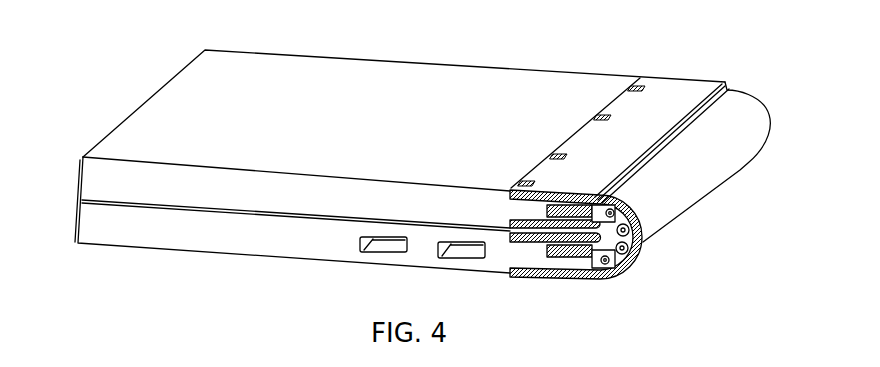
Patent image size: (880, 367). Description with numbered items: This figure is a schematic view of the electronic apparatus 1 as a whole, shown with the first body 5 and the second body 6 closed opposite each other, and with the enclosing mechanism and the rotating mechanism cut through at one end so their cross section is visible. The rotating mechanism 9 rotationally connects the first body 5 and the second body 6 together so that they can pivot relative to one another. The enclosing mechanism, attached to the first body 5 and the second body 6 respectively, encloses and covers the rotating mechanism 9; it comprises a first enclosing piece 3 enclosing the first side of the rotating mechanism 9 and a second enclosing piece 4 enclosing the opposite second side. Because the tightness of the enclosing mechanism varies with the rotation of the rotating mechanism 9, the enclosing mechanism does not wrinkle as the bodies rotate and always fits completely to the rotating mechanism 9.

The electronic apparatus 1 is at (458, 38).
The first enclosing piece 3 is at (613, 223).
The second enclosing piece 4 is at (637, 240).
The first body 5 is at (140, 142).
The second body 6 is at (123, 227).
The rotating mechanism 9 is at (607, 265).